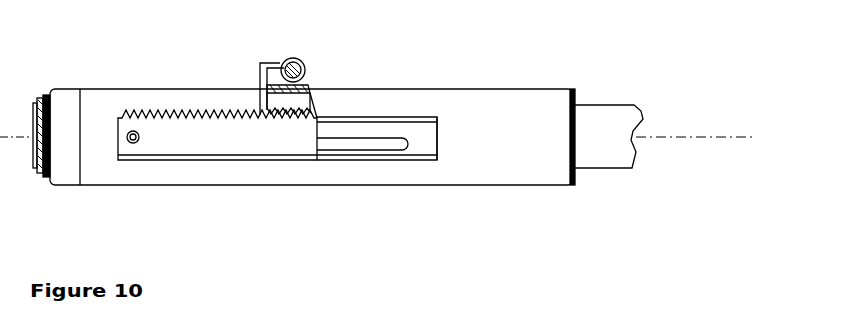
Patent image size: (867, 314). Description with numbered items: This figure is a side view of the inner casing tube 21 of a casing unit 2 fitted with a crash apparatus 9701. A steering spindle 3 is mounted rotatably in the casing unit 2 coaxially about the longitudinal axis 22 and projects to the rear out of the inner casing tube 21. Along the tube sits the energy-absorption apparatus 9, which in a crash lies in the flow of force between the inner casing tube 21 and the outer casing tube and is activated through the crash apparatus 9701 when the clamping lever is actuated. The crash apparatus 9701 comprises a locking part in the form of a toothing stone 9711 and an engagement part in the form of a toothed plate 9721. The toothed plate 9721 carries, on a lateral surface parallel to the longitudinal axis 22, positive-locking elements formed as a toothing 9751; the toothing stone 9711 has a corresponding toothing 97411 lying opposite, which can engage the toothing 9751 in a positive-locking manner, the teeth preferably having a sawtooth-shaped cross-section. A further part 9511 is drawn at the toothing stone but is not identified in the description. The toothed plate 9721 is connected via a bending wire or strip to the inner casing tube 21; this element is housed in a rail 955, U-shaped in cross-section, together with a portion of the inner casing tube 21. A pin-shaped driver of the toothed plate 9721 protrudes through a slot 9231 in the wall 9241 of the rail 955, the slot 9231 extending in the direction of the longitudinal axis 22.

The casing unit 2 is at (547, 68).
The inner casing tube 21 is at (472, 112).
The longitudinal axis 22 is at (732, 135).
The steering spindle 3 is at (602, 142).
The energy-absorption apparatus 9 is at (328, 107).
The pivot pin 9511 is at (301, 62).
The toothing 97411 is at (268, 100).
The toothing stone 9711 is at (290, 100).
The crash apparatus 9701 is at (383, 100).
The toothing 9751 is at (235, 118).
The toothed plate 9721 is at (270, 145).
The slot 9231 is at (349, 145).
The wall 9241 is at (446, 146).
The rail 955 is at (448, 132).